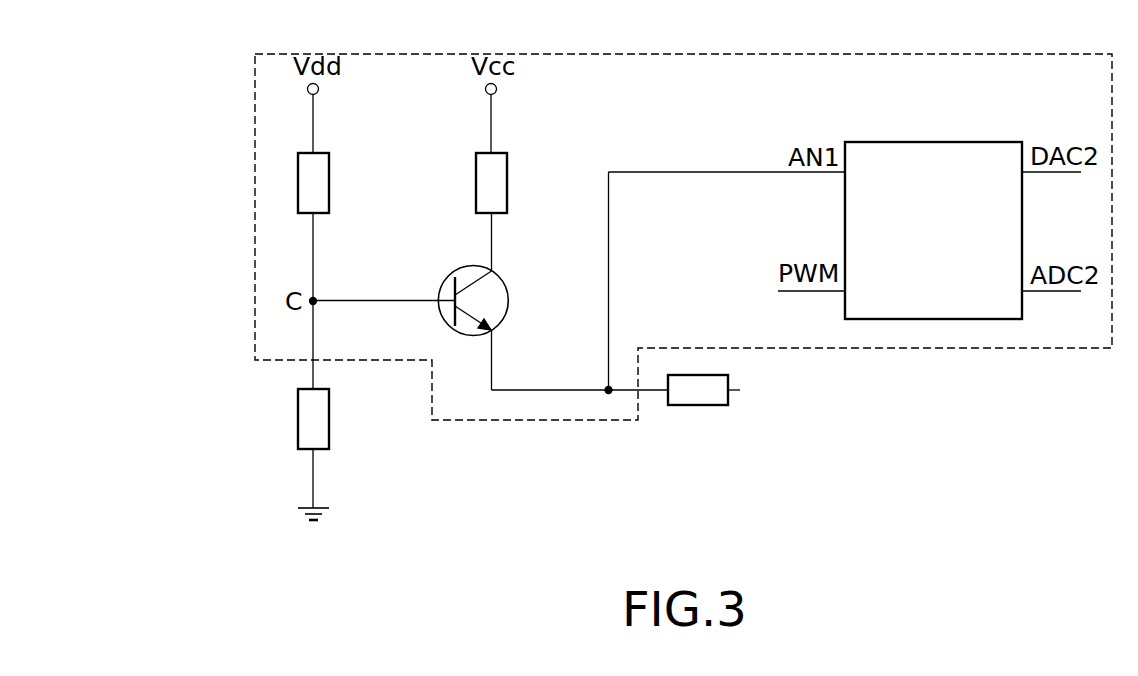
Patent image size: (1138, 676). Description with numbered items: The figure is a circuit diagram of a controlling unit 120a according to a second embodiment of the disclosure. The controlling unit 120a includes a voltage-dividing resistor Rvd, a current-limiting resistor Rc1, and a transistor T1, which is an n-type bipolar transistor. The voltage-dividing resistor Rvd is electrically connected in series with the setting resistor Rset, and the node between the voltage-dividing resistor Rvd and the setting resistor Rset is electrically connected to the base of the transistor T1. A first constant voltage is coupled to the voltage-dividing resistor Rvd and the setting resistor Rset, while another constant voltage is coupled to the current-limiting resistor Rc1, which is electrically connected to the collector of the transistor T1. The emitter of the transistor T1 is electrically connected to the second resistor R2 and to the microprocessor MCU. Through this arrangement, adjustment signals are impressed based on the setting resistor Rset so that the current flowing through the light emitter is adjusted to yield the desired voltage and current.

The controlling unit 120a is at (682, 58).
The voltage-dividing resistor Rvd is at (339, 183).
The setting resistor Rset is at (343, 419).
The current-limiting resistor Rc1 is at (517, 183).
The transistor T1 is at (493, 301).
The second resistor R2 is at (698, 405).
The microprocessor MCU is at (933, 230).